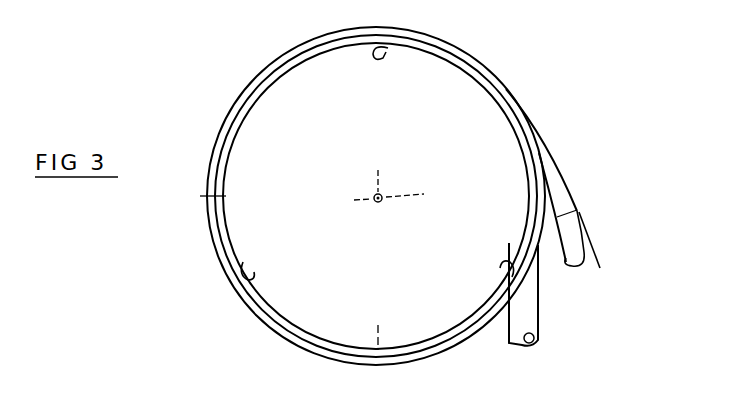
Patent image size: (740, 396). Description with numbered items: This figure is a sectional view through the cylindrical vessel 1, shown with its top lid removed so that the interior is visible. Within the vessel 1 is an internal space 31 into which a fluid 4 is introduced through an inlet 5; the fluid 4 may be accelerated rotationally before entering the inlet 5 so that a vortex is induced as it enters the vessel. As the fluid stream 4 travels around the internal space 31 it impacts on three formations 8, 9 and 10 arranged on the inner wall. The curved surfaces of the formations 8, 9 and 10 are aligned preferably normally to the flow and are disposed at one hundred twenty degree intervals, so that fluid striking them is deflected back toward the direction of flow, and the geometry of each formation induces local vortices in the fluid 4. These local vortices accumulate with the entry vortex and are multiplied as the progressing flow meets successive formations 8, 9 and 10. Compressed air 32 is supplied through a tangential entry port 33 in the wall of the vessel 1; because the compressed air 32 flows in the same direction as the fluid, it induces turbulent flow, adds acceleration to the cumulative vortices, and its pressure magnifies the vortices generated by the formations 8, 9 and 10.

The vessel 1 is at (210, 235).
The internal space 31 is at (310, 130).
The tangential entry port 33 is at (562, 182).
The compressed air 32 is at (577, 266).
The inlet 5 is at (545, 302).
The fluid 4 is at (525, 345).
The formation 8 is at (382, 58).
The formation 9 is at (258, 268).
The formation 10 is at (500, 268).